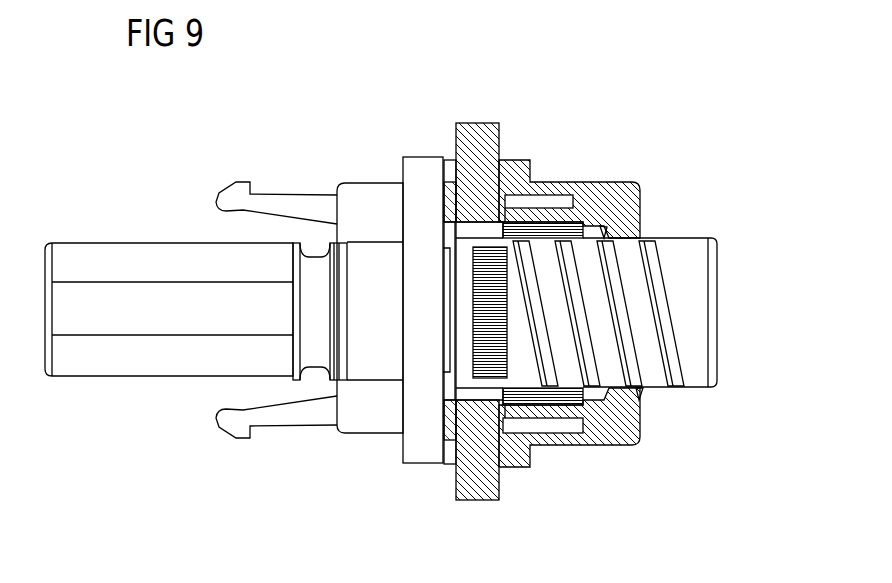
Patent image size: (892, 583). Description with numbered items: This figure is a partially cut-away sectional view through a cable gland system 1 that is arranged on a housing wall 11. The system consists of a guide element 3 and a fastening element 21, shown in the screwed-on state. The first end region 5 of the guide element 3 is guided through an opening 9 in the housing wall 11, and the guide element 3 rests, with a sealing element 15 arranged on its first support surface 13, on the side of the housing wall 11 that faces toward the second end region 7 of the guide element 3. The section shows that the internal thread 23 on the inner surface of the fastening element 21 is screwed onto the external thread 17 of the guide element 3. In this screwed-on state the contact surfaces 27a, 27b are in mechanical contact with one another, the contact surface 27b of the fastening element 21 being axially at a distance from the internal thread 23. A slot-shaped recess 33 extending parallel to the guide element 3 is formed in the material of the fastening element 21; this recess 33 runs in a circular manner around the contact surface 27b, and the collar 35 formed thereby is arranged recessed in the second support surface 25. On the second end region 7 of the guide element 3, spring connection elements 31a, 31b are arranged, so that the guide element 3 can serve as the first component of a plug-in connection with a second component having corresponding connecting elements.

The cable gland system 1 is at (712, 156).
The guide element 3 is at (731, 400).
The first end region 5 is at (697, 291).
The second end region 7 is at (112, 262).
The opening 9 is at (472, 392).
The housing wall 11 is at (478, 130).
The first support surface 13 is at (445, 205).
The sealing element 15 is at (452, 185).
The external thread 17 is at (657, 253).
The fastening element 21 is at (611, 190).
The internal thread 23 is at (641, 398).
The second support surface 25 is at (510, 215).
The contact surface 27a is at (504, 396).
The contact surface 27b is at (568, 398).
The spring connection element 31a is at (284, 203).
The spring connection element 31b is at (293, 408).
The slot-shaped recess 33 is at (568, 192).
The collar 35 is at (542, 200).